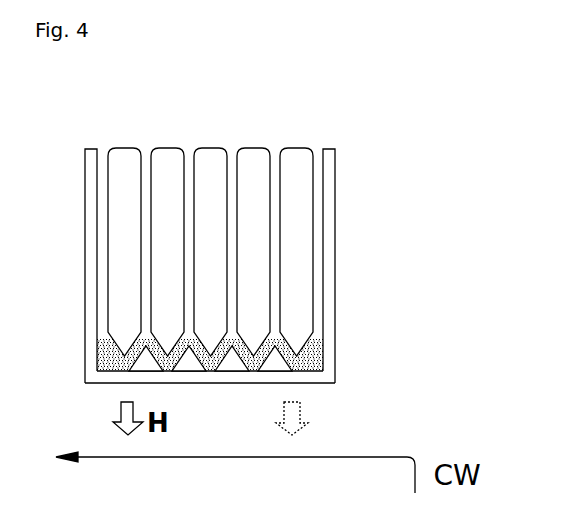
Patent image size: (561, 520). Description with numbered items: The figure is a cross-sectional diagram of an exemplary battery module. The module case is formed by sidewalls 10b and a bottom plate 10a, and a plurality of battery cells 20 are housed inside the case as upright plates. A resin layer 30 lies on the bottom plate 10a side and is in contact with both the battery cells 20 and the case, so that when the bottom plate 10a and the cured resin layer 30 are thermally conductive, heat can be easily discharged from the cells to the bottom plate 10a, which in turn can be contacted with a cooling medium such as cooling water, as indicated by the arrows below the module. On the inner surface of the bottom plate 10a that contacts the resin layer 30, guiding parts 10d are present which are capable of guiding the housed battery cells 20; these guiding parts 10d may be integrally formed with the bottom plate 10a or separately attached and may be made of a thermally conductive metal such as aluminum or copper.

The battery cells 20 is at (166, 148).
The resin layer 30 is at (107, 354).
The bottom plate 10a is at (208, 383).
The sidewalls 10b is at (335, 245).
The guiding part 10d is at (278, 360).